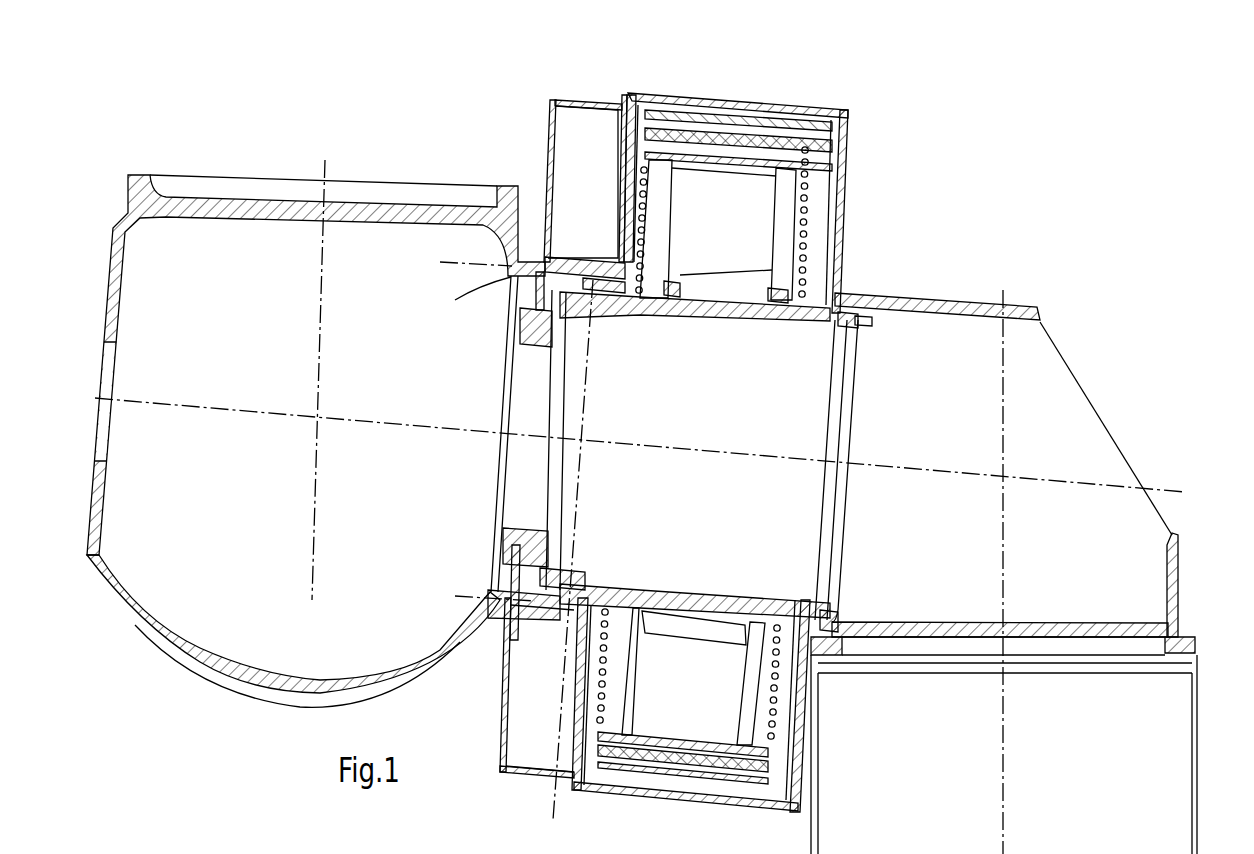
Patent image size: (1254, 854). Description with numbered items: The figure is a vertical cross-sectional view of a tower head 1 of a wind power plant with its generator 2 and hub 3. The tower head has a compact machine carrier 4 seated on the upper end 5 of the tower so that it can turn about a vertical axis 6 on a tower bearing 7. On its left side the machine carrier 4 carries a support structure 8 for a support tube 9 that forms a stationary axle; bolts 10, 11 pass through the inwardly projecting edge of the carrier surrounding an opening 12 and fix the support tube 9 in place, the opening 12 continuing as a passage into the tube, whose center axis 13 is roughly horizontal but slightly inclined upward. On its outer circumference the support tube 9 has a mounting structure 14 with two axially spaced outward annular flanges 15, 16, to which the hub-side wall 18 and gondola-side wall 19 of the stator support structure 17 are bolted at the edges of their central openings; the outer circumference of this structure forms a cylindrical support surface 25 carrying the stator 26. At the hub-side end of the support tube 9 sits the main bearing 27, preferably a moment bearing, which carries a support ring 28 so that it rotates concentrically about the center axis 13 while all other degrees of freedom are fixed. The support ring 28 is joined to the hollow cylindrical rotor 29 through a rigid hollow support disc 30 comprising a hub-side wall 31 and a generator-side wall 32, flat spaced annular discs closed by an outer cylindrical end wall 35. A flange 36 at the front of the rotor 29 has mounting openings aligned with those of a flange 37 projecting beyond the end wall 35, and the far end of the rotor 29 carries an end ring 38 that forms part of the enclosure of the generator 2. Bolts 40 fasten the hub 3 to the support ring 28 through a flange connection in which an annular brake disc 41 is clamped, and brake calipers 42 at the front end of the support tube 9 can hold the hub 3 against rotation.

The tower head 1 is at (1075, 168).
The generator 2 is at (895, 108).
The hub 3 is at (390, 132).
The machine carrier 4 is at (955, 298).
The upper end of the tower 5 is at (1198, 706).
The vertical axis 6 is at (1005, 562).
The tower bearing 7 is at (1186, 630).
The support structure 8 is at (846, 334).
The support tube 9 is at (690, 310).
The bolt 10 is at (866, 318).
The bolt 11 is at (840, 612).
The opening 12 is at (840, 425).
The center axis 13 is at (905, 465).
The mounting structure 14 is at (774, 215).
The annular flange 15 is at (682, 278).
The annular flange 16 is at (764, 286).
The stator support structure 17 is at (800, 245).
The hub-side wall 18 is at (665, 238).
The gondola-side wall 19 is at (780, 226).
The cylindrical support surface 25 is at (838, 162).
The stator 26 is at (812, 125).
The main bearing 27 is at (600, 300).
The support ring 28 is at (562, 260).
The rotor 29 is at (760, 105).
The support disc 30 is at (548, 90).
The hub-side wall 31 is at (548, 150).
The generator-side wall 32 is at (622, 162).
The end wall 35 is at (615, 104).
The flange 36 is at (634, 95).
The flange 37 is at (626, 95).
The end ring 38 is at (845, 175).
The bolts 40 is at (517, 270).
The brake disc 41 is at (507, 565).
The brake calipers 42 is at (548, 355).